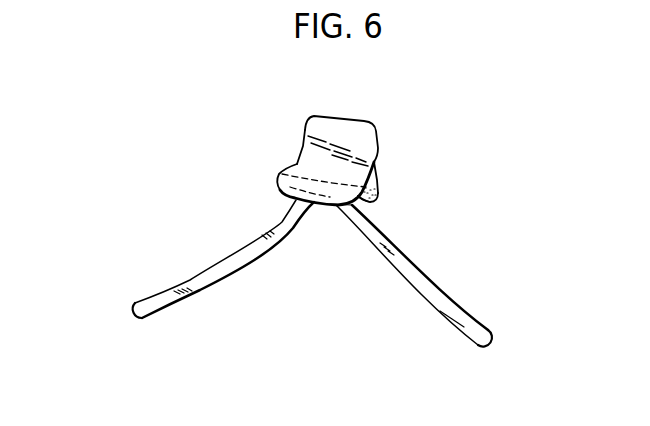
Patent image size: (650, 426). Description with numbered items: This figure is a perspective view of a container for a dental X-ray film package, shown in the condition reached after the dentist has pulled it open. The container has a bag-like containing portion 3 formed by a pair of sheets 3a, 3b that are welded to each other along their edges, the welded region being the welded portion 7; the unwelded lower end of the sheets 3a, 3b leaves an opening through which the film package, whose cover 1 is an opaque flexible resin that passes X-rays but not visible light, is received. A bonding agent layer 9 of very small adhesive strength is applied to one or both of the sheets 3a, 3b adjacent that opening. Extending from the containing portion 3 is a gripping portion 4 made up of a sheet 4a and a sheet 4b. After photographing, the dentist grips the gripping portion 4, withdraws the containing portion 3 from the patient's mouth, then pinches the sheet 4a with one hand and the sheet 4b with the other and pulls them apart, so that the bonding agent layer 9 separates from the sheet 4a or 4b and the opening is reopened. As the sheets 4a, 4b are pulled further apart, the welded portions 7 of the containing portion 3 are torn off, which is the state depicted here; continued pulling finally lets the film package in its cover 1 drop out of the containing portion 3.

The cover 1 is at (331, 204).
The containing portion 3 is at (361, 138).
The sheet 3a is at (298, 167).
The sheet 3b is at (378, 181).
The gripping portion 4 is at (343, 295).
The sheet 4a is at (210, 274).
The sheet 4b is at (434, 297).
The welded portion 7 is at (378, 152).
The bonding agent layer 9 is at (378, 205).